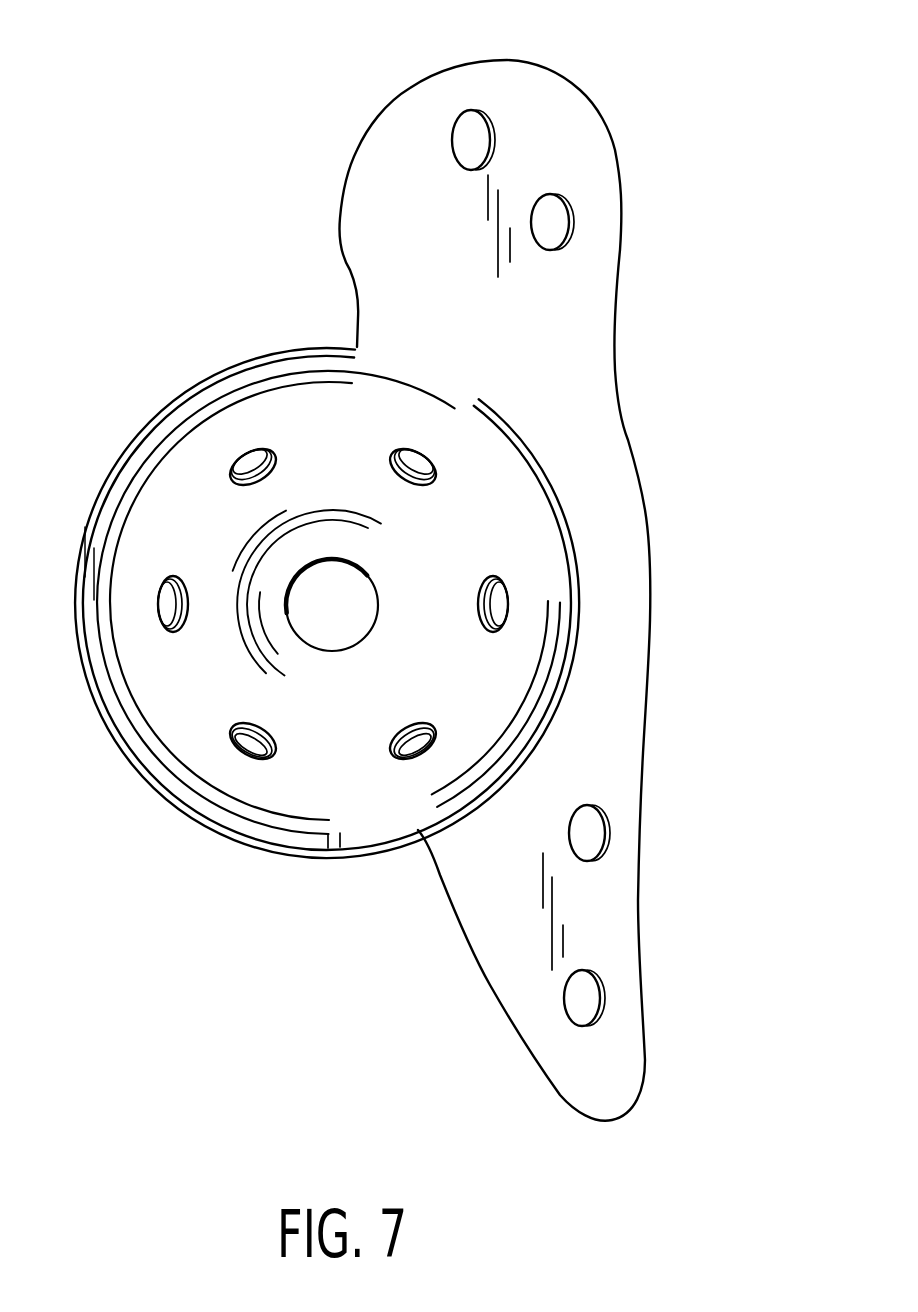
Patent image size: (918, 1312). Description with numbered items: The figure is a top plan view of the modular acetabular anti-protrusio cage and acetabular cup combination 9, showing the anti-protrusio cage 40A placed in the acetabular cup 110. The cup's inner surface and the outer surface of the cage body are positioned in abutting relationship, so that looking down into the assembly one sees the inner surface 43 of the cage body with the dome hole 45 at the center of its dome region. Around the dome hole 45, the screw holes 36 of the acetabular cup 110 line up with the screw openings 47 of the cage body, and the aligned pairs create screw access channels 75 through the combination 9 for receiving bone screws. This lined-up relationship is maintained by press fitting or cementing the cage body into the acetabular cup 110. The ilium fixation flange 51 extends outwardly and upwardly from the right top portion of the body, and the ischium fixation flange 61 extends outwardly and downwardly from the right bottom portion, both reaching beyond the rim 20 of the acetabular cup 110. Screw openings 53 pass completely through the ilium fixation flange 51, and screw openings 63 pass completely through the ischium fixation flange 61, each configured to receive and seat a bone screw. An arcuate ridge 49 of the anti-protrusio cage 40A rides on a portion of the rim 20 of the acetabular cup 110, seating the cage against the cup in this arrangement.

The modular acetabular anti-protrusio cage and acetabular cup combination 9 is at (236, 863).
The rim 20 is at (240, 376).
The screw holes 36 is at (412, 483).
The anti-protrusio cage 40A is at (650, 548).
The inner surface 43 is at (346, 725).
The dome hole 45 is at (376, 590).
The screw openings 47 is at (388, 448).
The arcuate ridge 49 is at (460, 410).
The ilium fixation flange 51 is at (421, 160).
The screw openings 53 is at (575, 206).
The ischium fixation flange 61 is at (627, 1062).
The screw openings 63 is at (613, 819).
The screw access channels 75 is at (230, 460).
The acetabular cup 110 is at (162, 413).